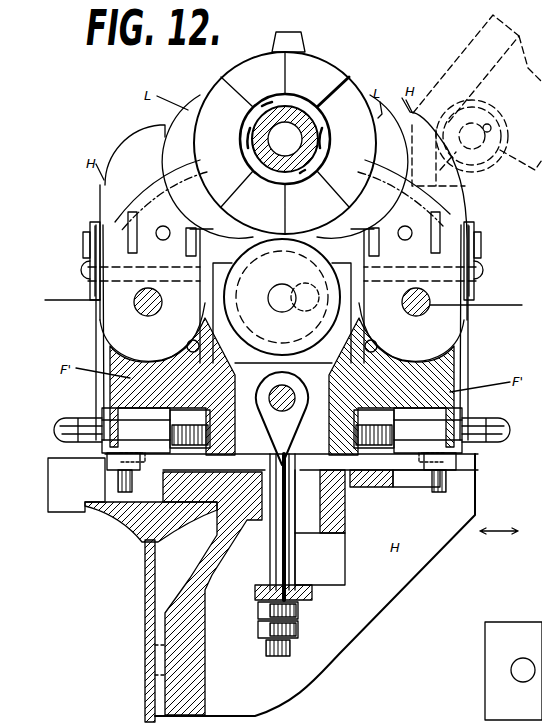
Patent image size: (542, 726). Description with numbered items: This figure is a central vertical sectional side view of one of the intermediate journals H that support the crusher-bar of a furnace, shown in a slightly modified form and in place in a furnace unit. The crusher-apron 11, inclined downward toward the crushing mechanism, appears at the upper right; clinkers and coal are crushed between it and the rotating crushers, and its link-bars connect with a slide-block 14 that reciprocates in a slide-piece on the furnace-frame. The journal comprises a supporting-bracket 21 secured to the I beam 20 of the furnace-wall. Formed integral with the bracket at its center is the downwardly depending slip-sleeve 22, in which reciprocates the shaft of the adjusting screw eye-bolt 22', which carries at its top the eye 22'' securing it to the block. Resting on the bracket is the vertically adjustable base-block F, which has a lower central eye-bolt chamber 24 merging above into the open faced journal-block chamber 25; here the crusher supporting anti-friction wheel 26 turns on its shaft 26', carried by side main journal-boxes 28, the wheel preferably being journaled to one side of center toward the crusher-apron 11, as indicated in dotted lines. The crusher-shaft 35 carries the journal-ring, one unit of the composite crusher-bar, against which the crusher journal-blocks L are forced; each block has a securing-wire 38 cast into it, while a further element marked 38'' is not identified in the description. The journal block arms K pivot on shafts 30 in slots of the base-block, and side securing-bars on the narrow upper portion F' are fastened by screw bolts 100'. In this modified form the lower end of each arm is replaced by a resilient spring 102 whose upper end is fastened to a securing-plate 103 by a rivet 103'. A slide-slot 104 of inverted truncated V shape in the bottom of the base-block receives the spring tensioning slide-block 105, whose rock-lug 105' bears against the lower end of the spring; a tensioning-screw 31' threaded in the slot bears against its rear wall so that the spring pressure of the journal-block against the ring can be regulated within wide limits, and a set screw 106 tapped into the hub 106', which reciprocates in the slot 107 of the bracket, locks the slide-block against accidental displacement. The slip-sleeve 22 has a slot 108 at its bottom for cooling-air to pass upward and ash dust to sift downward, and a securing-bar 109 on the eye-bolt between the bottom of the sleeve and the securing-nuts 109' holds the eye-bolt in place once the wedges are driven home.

The crusher-apron 11 is at (444, 70).
The slide-block 14 is at (280, 298).
The I beam 20 is at (144, 586).
The supporting-bracket 21 is at (222, 598).
The slip-sleeve 22 is at (347, 501).
The adjusting screw eye-bolt 22' is at (280, 568).
The eye 22'' is at (293, 418).
The eye-bolt chamber 24 is at (283, 402).
The journal-block chamber 25 is at (356, 300).
The anti-friction wheel 26 is at (282, 297).
The shaft 26' is at (283, 301).
The main journal-box 28 is at (224, 343).
The shaft 30 is at (134, 306).
The tensioning-screw 31' is at (291, 422).
The crusher-shaft 35 is at (285, 139).
The securing-wire 38 is at (306, 195).
The slot 38'' is at (284, 237).
The screw bolts 100' is at (288, 336).
The resilient spring 102 is at (82, 270).
The securing-plate 103 is at (283, 254).
The rivet 103' is at (284, 244).
The slide-slot 104 is at (282, 428).
The spring tensioning slide-block 105 is at (279, 452).
The rock-lug 105' is at (285, 454).
The set screw 106 is at (283, 585).
The hub 106' is at (315, 475).
The slot 107 is at (410, 488).
The slot 108 is at (320, 527).
The securing-bar 109 is at (304, 594).
The securing-nuts 109' is at (306, 620).